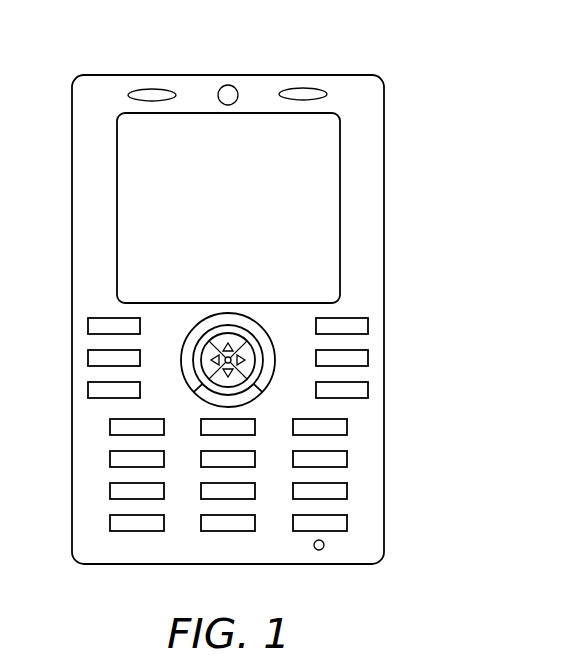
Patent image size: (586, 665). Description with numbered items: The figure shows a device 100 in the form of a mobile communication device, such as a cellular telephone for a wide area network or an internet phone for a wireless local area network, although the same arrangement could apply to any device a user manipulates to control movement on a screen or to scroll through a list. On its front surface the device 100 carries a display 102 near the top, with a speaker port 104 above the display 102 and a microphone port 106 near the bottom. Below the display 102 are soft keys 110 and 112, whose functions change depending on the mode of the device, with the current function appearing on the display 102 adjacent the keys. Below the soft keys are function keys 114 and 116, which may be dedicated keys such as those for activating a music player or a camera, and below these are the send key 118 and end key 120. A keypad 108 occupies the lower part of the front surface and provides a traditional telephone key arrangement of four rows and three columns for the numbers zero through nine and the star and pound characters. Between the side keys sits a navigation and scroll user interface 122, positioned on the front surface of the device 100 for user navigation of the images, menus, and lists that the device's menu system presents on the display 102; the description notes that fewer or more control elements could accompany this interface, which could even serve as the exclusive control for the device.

The device 100 is at (507, 51).
The display 102 is at (332, 197).
The speaker port 104 is at (254, 86).
The microphone port 106 is at (319, 550).
The keypad 108 is at (373, 459).
The soft key 110 is at (88, 326).
The soft key 112 is at (368, 326).
The function key 114 is at (88, 358).
The function key 116 is at (368, 358).
The send key 118 is at (88, 390).
The end key 120 is at (368, 390).
The navigation and scroll user interface 122 is at (296, 323).